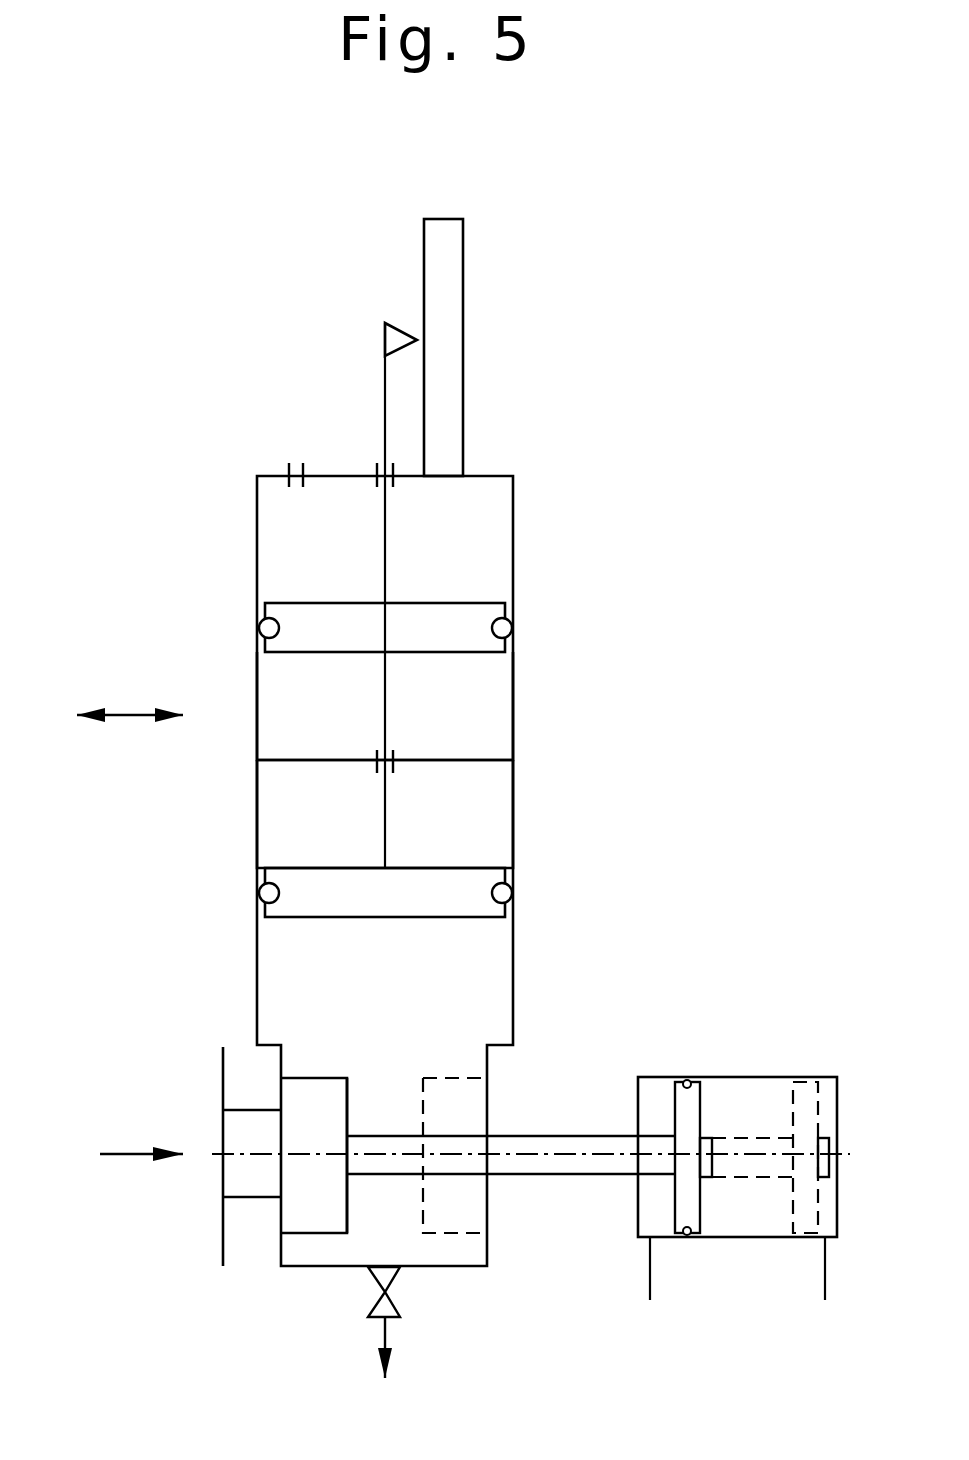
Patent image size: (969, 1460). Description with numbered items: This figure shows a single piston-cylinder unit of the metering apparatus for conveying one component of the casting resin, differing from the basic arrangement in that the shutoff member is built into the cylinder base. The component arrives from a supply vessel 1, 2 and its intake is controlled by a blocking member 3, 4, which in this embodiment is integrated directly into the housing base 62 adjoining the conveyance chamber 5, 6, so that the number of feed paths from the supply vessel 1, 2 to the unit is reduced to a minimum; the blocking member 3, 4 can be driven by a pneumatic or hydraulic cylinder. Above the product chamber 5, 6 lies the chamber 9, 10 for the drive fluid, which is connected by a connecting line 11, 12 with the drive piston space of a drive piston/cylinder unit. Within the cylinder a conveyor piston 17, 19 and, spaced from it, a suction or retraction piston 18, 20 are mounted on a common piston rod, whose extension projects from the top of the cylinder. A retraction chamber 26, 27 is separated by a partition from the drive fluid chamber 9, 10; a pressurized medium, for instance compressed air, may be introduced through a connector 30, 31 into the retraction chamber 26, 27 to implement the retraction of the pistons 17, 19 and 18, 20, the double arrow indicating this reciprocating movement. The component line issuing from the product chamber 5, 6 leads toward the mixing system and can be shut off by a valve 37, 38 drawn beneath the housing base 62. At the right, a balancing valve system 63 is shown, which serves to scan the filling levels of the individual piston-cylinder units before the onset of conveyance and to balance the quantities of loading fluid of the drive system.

The supply vessel 1 is at (188, 1156).
The supply vessel 2 is at (188, 1156).
The shutoff valve 3 is at (531, 1107).
The shutoff valve 4 is at (552, 1136).
The product chamber 5 is at (385, 864).
The product chamber 6 is at (408, 1002).
The drive fluid chamber 9 is at (432, 595).
The drive fluid chamber 10 is at (480, 833).
The connecting line 11 is at (462, 814).
The connecting line 12 is at (513, 788).
The conveyor piston 17 is at (385, 892).
The conveyor piston 19 is at (428, 908).
The retraction piston 18 is at (385, 627).
The retraction piston 20 is at (428, 643).
The retraction chamber 26 is at (385, 706).
The retraction chamber 27 is at (367, 720).
The connector 30 is at (270, 503).
The connector 31 is at (197, 733).
The valve 37 is at (452, 1322).
The valve 38 is at (387, 1290).
The housing base 62 is at (373, 1203).
The balancing valve system 63 is at (753, 1208).